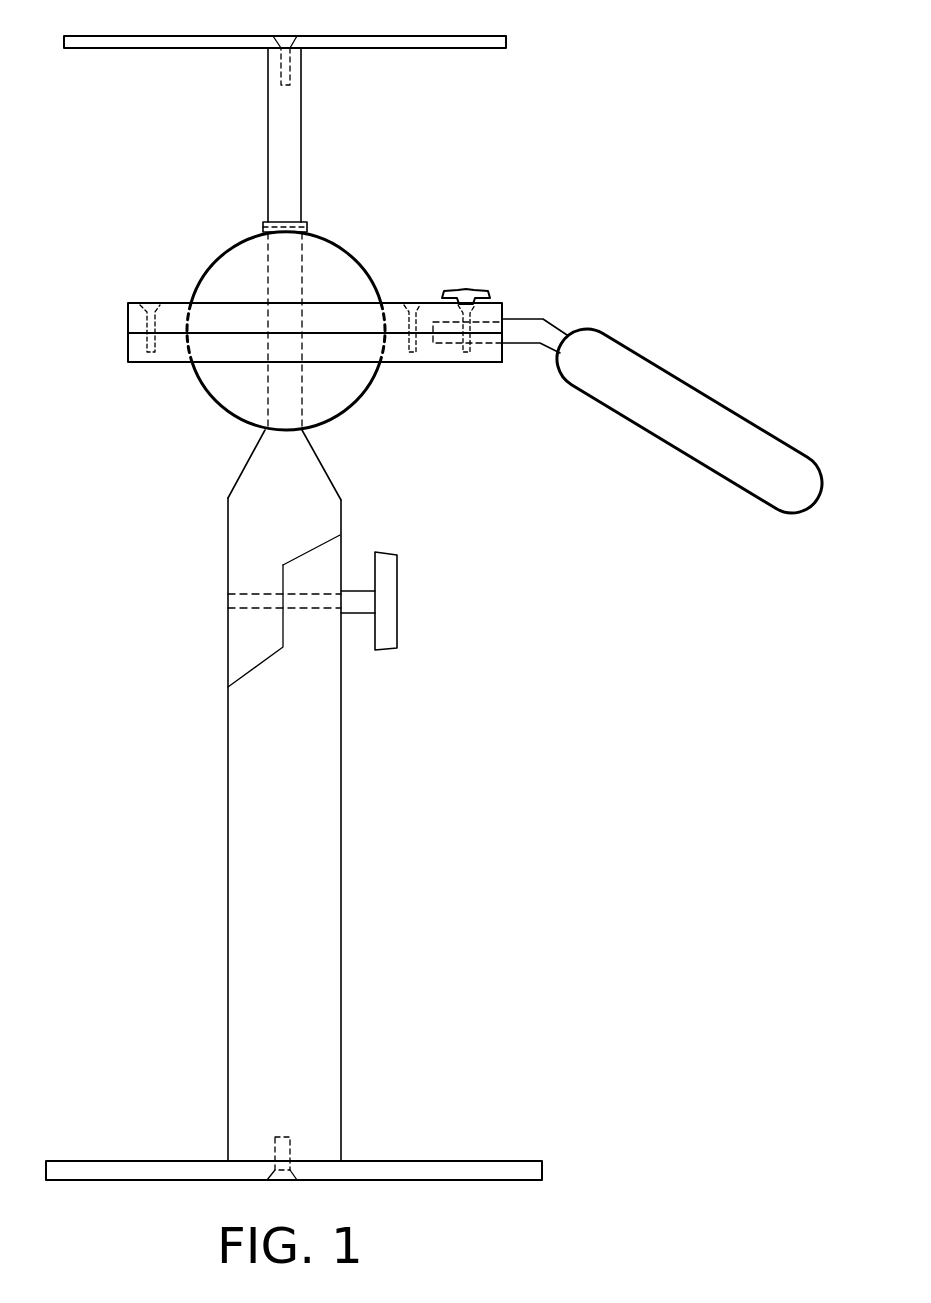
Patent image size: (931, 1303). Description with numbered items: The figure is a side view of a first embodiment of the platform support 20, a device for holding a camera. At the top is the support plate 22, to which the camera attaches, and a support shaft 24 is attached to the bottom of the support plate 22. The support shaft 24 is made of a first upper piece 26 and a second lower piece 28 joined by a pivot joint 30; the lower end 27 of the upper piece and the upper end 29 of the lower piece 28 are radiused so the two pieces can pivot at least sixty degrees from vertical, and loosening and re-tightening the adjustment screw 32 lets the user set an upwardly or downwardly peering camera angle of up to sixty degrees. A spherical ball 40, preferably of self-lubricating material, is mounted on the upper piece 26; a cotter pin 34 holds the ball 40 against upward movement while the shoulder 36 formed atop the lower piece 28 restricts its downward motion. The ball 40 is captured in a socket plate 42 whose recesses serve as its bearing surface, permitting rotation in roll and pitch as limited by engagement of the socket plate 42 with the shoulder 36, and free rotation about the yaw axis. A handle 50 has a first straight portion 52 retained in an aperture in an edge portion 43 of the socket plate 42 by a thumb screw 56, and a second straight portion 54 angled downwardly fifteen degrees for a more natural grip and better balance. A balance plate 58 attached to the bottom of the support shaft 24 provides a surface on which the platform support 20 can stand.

The platform support 20 is at (557, 870).
The support plate 22 is at (506, 42).
The support shaft 24 is at (227, 902).
The first upper piece 26 is at (302, 142).
The lower end of upper piece 27 is at (258, 668).
The second lower piece 28 is at (341, 840).
The upper end of lower piece 29 is at (312, 548).
The pivot joint 30 is at (228, 594).
The adjustment screw 32 is at (397, 583).
The cotter pin 34 is at (307, 223).
The shoulder 36 is at (318, 457).
The spherical ball 40 is at (358, 262).
The socket plate 42 is at (128, 302).
The edge portion 43 is at (502, 353).
The handle 50 is at (705, 477).
The first straight portion 52 is at (537, 319).
The second straight portion 54 is at (665, 368).
The thumb screw 56 is at (467, 290).
The balance plate 58 is at (502, 1161).